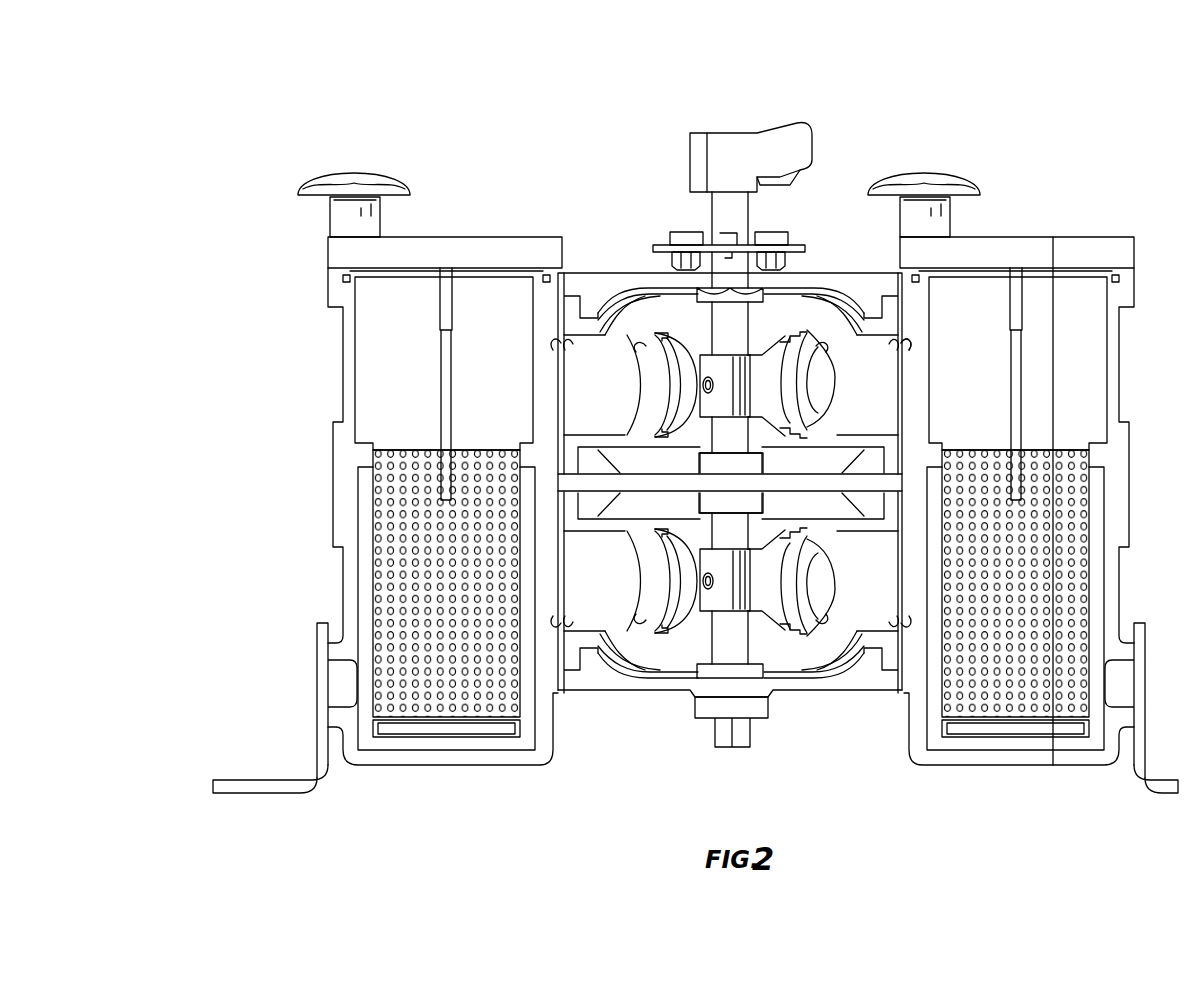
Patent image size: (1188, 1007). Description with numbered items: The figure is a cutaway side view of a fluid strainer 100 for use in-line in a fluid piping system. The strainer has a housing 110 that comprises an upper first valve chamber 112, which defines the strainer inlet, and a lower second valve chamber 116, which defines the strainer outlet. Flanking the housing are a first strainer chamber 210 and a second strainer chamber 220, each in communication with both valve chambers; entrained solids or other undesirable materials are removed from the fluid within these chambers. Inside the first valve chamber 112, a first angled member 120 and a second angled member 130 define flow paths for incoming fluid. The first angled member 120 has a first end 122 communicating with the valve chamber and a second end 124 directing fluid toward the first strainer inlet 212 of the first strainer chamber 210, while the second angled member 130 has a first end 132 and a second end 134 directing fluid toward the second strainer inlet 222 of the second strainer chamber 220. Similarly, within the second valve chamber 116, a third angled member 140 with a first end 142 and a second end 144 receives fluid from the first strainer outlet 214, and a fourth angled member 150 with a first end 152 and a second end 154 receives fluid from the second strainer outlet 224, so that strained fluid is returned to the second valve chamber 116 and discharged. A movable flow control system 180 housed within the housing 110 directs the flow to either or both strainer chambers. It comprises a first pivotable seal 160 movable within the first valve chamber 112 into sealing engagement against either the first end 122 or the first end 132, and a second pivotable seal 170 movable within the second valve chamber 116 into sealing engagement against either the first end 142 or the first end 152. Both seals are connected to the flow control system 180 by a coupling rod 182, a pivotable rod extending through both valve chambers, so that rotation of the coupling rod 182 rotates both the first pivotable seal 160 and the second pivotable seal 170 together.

The fluid strainer 100 is at (428, 87).
The housing 110 is at (607, 248).
The first valve chamber 112 is at (680, 330).
The second valve chamber 116 is at (695, 680).
The first angled member 120 is at (610, 330).
The first end 122 is at (640, 350).
The second end 124 is at (553, 340).
The second angled member 130 is at (877, 330).
The first end 132 is at (818, 338).
The second end 134 is at (905, 335).
The third angled member 140 is at (615, 632).
The first end 142 is at (640, 640).
The second end 144 is at (588, 620).
The fourth angled member 150 is at (850, 645).
The first end 152 is at (810, 630).
The second end 154 is at (883, 617).
The first pivotable seal 160 is at (770, 365).
The second pivotable seal 170 is at (775, 612).
The flow control system 180 is at (685, 183).
The coupling rod 182 is at (727, 437).
The first strainer chamber 210 is at (302, 309).
The first strainer inlet 212 is at (530, 350).
The first strainer outlet 214 is at (533, 637).
The second strainer chamber 220 is at (1078, 185).
The second strainer inlet 222 is at (920, 360).
The second strainer outlet 224 is at (930, 630).